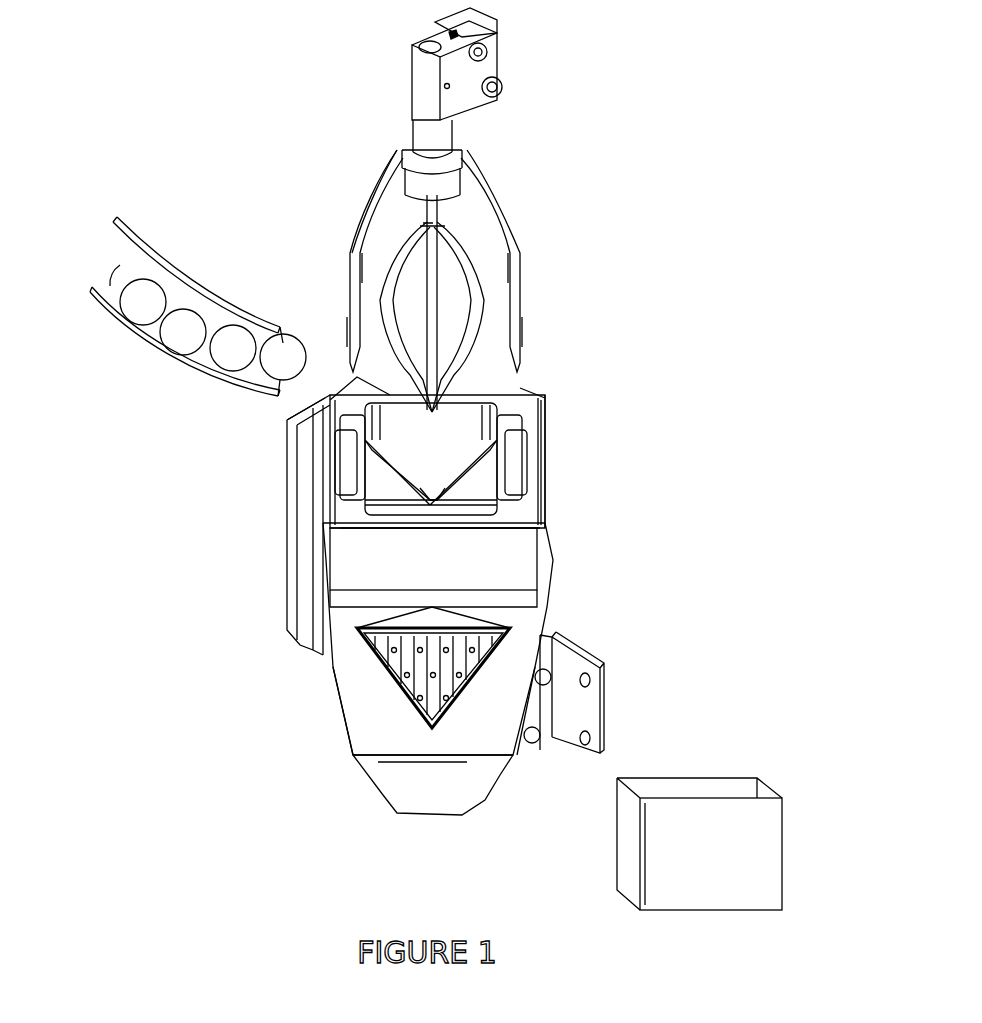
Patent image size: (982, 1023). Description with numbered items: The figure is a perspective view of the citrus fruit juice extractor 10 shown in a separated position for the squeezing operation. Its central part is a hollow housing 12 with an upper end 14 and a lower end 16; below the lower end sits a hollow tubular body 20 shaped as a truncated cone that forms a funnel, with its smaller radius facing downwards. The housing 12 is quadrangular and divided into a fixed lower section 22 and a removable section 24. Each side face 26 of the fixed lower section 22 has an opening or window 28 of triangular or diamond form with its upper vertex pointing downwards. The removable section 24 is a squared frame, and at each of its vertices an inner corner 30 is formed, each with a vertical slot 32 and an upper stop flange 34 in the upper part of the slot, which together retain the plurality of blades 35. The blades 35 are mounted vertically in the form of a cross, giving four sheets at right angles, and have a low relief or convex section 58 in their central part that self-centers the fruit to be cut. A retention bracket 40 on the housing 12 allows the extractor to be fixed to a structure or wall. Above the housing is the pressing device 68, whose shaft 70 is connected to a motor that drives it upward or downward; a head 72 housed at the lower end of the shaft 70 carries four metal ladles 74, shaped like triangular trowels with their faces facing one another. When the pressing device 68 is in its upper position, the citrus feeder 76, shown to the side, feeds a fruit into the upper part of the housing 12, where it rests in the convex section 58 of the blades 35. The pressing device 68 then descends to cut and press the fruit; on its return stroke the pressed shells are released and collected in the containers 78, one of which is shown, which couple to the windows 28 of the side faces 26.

The citrus fruit juice extractor 10 is at (620, 362).
The hollow housing 12 is at (548, 622).
The upper end 14 is at (520, 388).
The lower end 16 is at (350, 752).
The hollow tubular body 20 is at (380, 785).
The fixed lower section 22 is at (333, 677).
The removable section 24 is at (545, 440).
The side faces 26 is at (365, 713).
The opening or window 28 is at (475, 680).
The inner corner 30 is at (500, 417).
The vertical slot 32 is at (505, 465).
The upper stop flange 34 is at (368, 430).
The plurality of blades 35 is at (485, 483).
The retention bracket 40 is at (300, 548).
The low relief or convex section 58 is at (432, 490).
The pressing device 68 is at (495, 205).
The shaft 70 is at (432, 135).
The head 72 is at (390, 210).
The metal ladles 74 is at (352, 315).
The citrus feeder 76 is at (160, 355).
The containers 78 is at (705, 785).